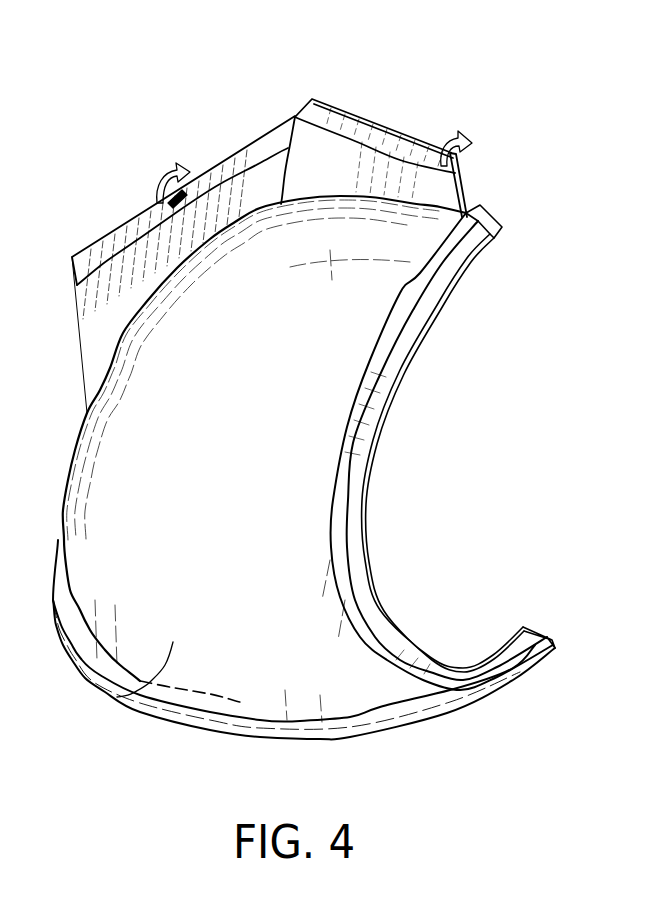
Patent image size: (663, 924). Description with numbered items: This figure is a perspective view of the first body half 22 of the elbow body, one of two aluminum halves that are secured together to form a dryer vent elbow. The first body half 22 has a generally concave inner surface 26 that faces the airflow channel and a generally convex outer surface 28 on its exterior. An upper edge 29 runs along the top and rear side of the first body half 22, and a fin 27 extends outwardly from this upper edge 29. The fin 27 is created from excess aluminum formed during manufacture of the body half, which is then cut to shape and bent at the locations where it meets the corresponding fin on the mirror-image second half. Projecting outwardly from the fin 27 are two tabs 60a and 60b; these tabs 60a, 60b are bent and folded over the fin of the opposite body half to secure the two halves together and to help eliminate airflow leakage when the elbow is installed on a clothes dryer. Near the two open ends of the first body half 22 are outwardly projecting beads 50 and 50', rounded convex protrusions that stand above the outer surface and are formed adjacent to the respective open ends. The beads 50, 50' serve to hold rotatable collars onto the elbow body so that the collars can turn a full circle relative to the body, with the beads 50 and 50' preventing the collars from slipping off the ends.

The first body half 22 is at (239, 461).
The concave inner surface 26 is at (366, 489).
The fin 27 is at (253, 170).
The convex outer surface 28 is at (117, 697).
The upper edge 29 is at (289, 145).
The bead 50 is at (441, 451).
The bead 50' is at (304, 670).
The tab 60a is at (365, 137).
The tab 60b is at (100, 240).